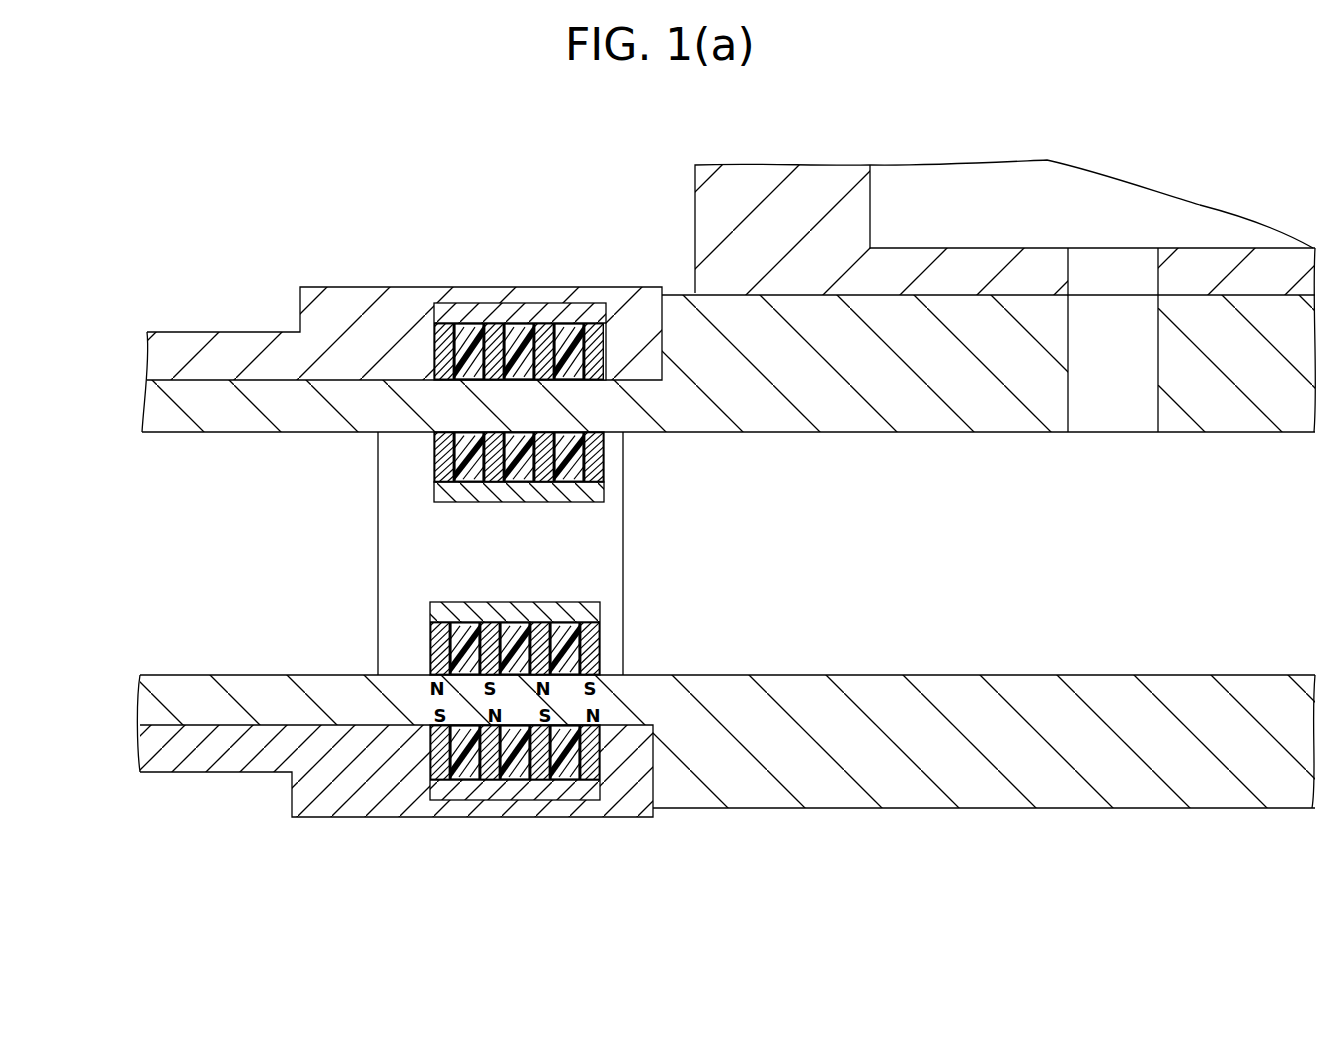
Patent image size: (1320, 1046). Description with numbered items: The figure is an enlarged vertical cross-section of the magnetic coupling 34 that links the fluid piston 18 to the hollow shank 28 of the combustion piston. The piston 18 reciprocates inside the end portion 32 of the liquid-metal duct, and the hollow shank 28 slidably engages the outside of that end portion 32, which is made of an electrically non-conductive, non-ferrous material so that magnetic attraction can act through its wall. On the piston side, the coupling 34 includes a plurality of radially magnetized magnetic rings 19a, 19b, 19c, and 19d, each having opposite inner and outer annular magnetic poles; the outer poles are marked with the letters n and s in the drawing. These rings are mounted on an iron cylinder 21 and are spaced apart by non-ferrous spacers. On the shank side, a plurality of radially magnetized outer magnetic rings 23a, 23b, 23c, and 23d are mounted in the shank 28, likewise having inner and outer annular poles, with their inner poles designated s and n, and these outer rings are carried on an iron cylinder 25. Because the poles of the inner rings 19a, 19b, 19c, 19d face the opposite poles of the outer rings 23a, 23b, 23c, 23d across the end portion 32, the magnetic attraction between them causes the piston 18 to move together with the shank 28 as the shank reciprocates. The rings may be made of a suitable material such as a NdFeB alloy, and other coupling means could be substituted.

The piston 18 is at (372, 600).
The magnetic ring 19a is at (430, 470).
The magnetic ring 19b is at (492, 503).
The magnetic ring 19c is at (538, 503).
The magnetic ring 19d is at (604, 452).
The iron cylinder 21 is at (503, 503).
The outer magnetic ring 23a is at (434, 328).
The outer magnetic ring 23b is at (496, 325).
The outer magnetic ring 23c is at (546, 324).
The outer magnetic ring 23d is at (603, 322).
The iron cylinder 25 is at (532, 801).
The hollow shank 28 is at (198, 331).
The end portion 32 is at (903, 809).
The magnetic coupling 34 is at (529, 252).